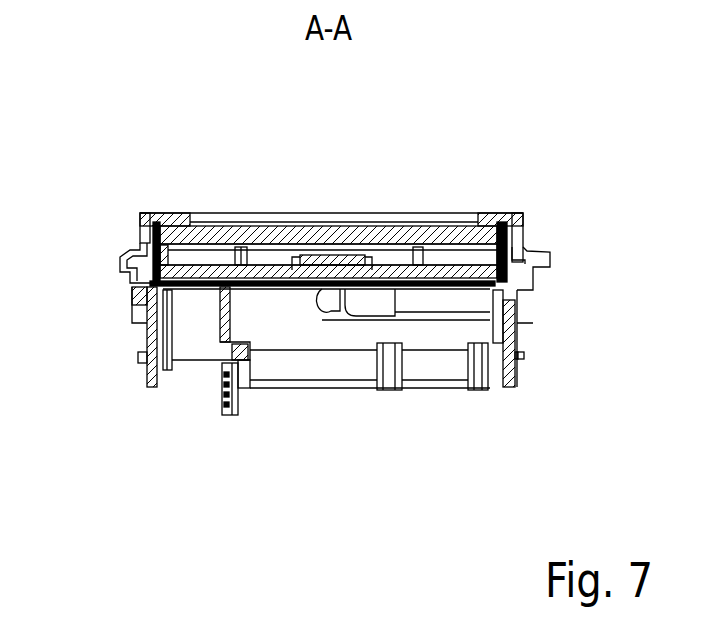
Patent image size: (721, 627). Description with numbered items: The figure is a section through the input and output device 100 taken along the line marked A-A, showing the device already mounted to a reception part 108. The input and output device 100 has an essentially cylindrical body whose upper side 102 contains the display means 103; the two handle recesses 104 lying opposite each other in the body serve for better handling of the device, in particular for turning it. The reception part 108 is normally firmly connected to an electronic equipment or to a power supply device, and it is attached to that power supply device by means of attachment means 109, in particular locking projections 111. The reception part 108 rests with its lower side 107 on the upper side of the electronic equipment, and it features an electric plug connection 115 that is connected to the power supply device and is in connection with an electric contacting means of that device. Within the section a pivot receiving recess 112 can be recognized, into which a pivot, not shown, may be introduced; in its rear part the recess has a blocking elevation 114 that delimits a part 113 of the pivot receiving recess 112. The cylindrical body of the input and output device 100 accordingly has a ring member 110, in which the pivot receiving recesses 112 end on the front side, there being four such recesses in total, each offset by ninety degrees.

The input and output device 100 is at (347, 314).
The upper side 102 is at (176, 214).
The display means 103 is at (428, 236).
The handle recesses 104 is at (138, 254).
The lower side 107 is at (470, 390).
The reception part 108 is at (520, 337).
The attachment means 109 is at (524, 356).
The ring member 110 is at (147, 381).
The locking projections 111 is at (138, 357).
The pivot receiving recess 112 is at (380, 311).
The part of the pivot receiving recess 113 is at (353, 256).
The blocking elevation 114 is at (352, 243).
The electric plug connection 115 is at (217, 404).